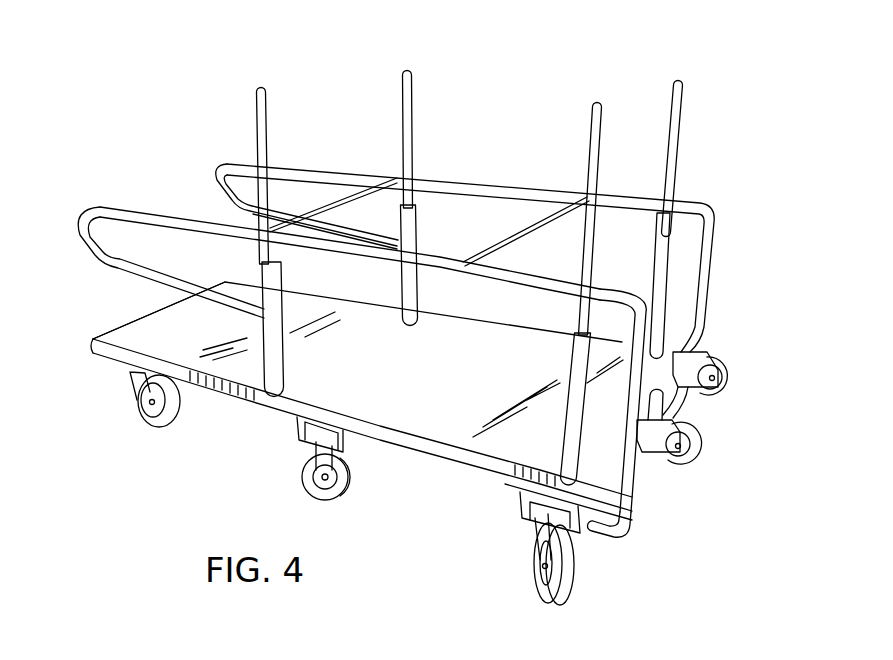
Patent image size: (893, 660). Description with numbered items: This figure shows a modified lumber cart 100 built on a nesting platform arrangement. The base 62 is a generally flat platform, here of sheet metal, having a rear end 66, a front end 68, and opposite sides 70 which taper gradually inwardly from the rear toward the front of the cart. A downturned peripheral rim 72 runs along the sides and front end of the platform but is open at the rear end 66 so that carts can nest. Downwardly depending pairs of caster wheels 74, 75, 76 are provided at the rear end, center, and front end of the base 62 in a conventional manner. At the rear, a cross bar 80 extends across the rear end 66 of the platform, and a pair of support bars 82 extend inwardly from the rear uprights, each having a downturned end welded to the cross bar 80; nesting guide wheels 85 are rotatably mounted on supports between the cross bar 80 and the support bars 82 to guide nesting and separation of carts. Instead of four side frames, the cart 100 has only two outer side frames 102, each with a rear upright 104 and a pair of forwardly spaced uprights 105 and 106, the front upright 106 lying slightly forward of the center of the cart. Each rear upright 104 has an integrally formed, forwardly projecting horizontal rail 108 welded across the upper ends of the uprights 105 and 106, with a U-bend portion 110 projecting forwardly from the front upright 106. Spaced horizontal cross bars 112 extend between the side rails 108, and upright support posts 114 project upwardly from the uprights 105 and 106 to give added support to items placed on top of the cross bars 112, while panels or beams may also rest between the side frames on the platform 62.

The base 62 is at (468, 342).
The rear end 66 is at (632, 512).
The front end 68 is at (128, 322).
The opposite sides 70 is at (450, 315).
The downturned peripheral rim 72 is at (473, 466).
The pair of caster wheels 74 is at (567, 568).
The pair of caster wheels 75 is at (303, 482).
The pair of caster wheels 76 is at (152, 430).
The cross bar 80 is at (643, 452).
The support bars 82 is at (695, 336).
The nesting guide wheels 85 is at (706, 437).
The lumber cart 100 is at (452, 138).
The outer side frames 102 is at (432, 240).
The rear upright 104 is at (642, 343).
The upright 105 is at (573, 352).
The front upright 106 is at (400, 272).
The horizontal rail 108 is at (638, 205).
The U-bend portion 110 is at (212, 177).
The cross bars 112 is at (348, 200).
The upright support posts 114 is at (405, 108).